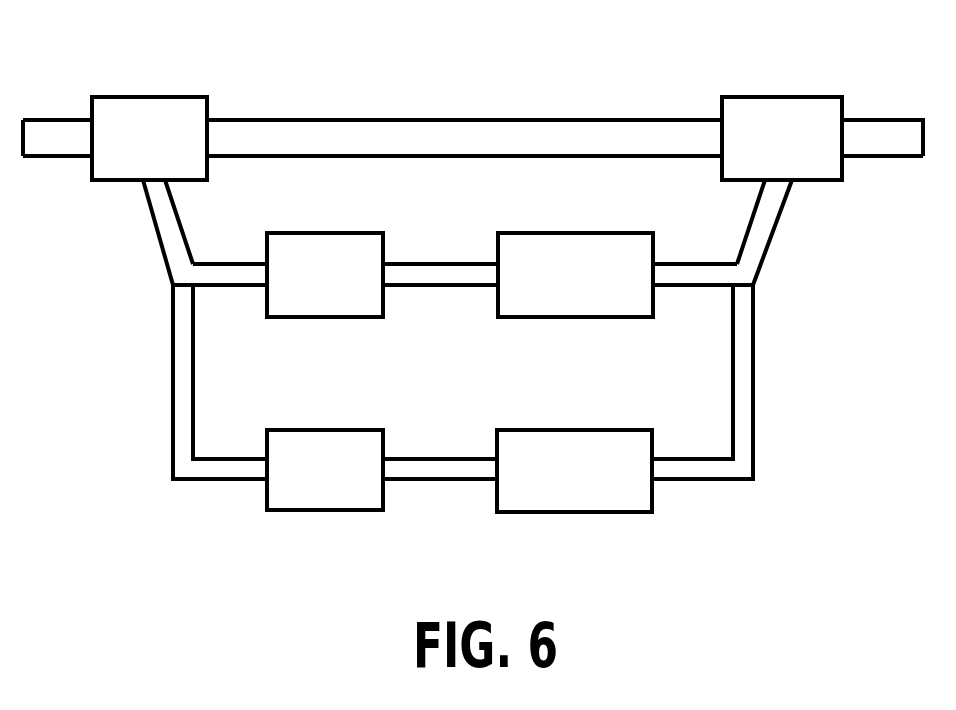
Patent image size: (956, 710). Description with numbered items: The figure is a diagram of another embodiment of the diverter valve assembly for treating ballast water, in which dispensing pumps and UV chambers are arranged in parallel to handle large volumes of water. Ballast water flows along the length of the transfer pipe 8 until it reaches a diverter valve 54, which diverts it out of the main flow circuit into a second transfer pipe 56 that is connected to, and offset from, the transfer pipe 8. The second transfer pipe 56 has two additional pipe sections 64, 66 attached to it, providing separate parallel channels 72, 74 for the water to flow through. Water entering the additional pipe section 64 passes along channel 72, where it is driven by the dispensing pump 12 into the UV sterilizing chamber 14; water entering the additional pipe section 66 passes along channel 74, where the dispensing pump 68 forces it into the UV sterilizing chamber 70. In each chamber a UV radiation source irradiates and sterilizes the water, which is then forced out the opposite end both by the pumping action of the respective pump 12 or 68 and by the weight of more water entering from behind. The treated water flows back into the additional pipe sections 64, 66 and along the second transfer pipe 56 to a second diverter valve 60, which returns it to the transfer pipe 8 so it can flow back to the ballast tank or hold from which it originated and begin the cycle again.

The transfer pipe 8 is at (458, 135).
The dispensing pump 12 is at (362, 303).
The UV sterilizing chamber 14 is at (628, 303).
The diverter valve 54 is at (148, 97).
The second transfer pipe 56 is at (150, 220).
The second diverter valve 60 is at (785, 97).
The additional pipe section 64 is at (225, 270).
The additional pipe section 66 is at (172, 363).
The dispensing pump 68 is at (275, 505).
The UV sterilizing chamber 70 is at (628, 505).
The channel 72 is at (438, 266).
The channel 74 is at (410, 468).